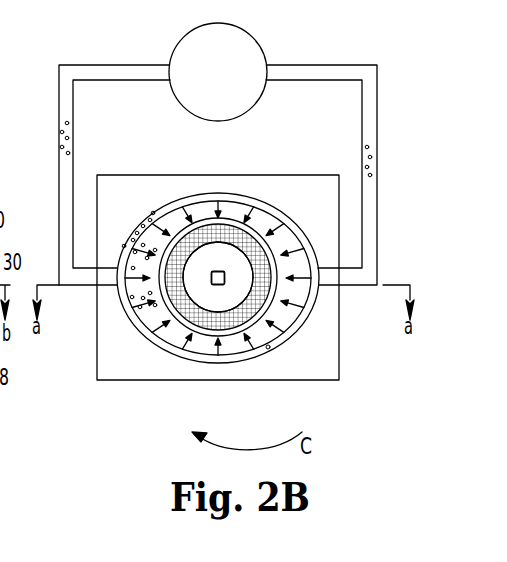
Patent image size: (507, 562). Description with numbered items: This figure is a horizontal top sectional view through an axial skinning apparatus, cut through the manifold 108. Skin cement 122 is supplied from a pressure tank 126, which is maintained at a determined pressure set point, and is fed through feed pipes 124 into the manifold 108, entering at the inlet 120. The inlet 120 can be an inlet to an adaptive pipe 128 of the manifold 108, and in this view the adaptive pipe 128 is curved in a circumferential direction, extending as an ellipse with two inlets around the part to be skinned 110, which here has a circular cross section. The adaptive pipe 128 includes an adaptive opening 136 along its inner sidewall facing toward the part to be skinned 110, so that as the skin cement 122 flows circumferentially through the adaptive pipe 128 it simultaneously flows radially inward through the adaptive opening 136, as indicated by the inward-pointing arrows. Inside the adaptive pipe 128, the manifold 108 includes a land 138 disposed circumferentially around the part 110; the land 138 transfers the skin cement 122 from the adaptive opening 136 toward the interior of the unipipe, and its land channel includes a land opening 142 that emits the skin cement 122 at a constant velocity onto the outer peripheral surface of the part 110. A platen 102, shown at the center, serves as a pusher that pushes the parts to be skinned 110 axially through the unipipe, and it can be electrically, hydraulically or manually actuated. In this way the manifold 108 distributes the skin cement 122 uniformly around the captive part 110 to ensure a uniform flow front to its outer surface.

The platen 102 is at (197, 270).
The manifold 108 is at (117, 342).
The part to be skinned 110 is at (211, 320).
The inlet 120 is at (115, 278).
The skin cement 122 is at (372, 156).
The feed pipe 124 is at (379, 107).
The pressure tank 126 is at (242, 44).
The adaptive pipe 128 is at (270, 348).
The adaptive opening 136 is at (282, 296).
The land 138 is at (170, 318).
The land opening 142 is at (285, 326).